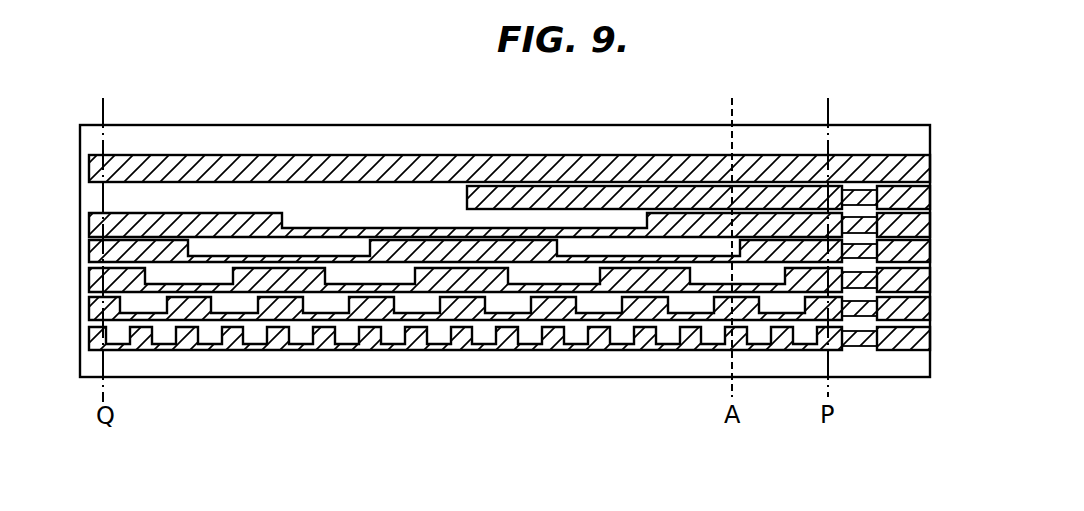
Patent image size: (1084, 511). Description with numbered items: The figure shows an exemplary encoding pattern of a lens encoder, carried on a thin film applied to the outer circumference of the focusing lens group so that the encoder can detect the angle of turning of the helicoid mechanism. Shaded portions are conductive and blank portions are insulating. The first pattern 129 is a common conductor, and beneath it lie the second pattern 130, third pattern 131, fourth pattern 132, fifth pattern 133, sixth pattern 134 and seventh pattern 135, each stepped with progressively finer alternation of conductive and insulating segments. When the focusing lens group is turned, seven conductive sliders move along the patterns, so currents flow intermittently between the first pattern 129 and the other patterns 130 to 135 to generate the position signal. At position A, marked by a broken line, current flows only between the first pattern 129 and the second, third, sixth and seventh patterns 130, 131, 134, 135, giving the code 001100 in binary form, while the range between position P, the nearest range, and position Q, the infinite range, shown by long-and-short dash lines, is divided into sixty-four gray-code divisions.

The first pattern 129 is at (747, 155).
The second pattern 130 is at (768, 192).
The third pattern 131 is at (668, 222).
The fourth pattern 132 is at (822, 249).
The fifth pattern 133 is at (843, 275).
The sixth pattern 134 is at (841, 312).
The seventh pattern 135 is at (832, 350).